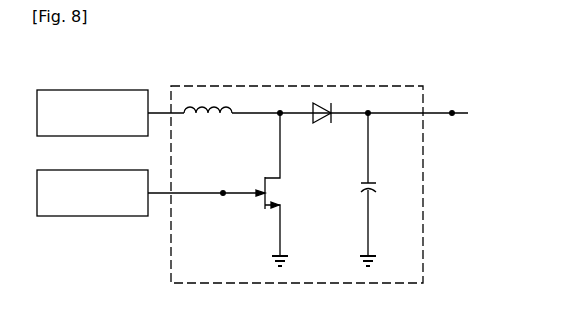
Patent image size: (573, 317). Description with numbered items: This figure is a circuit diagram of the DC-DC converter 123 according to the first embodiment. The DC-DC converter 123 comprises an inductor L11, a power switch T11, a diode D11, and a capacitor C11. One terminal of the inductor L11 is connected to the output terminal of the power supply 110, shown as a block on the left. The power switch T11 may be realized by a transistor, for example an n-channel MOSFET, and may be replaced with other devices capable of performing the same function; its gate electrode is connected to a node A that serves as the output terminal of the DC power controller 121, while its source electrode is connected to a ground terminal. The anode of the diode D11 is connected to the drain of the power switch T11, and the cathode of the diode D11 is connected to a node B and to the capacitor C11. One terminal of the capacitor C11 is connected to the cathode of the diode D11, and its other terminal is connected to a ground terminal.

The power supply 110 is at (95, 90).
The DC power controller 121 is at (95, 216).
The DC-DC converter 123 is at (375, 86).
The inductor L11 is at (208, 119).
The diode D11 is at (322, 122).
The power switch T11 is at (228, 189).
The capacitor C11 is at (385, 189).